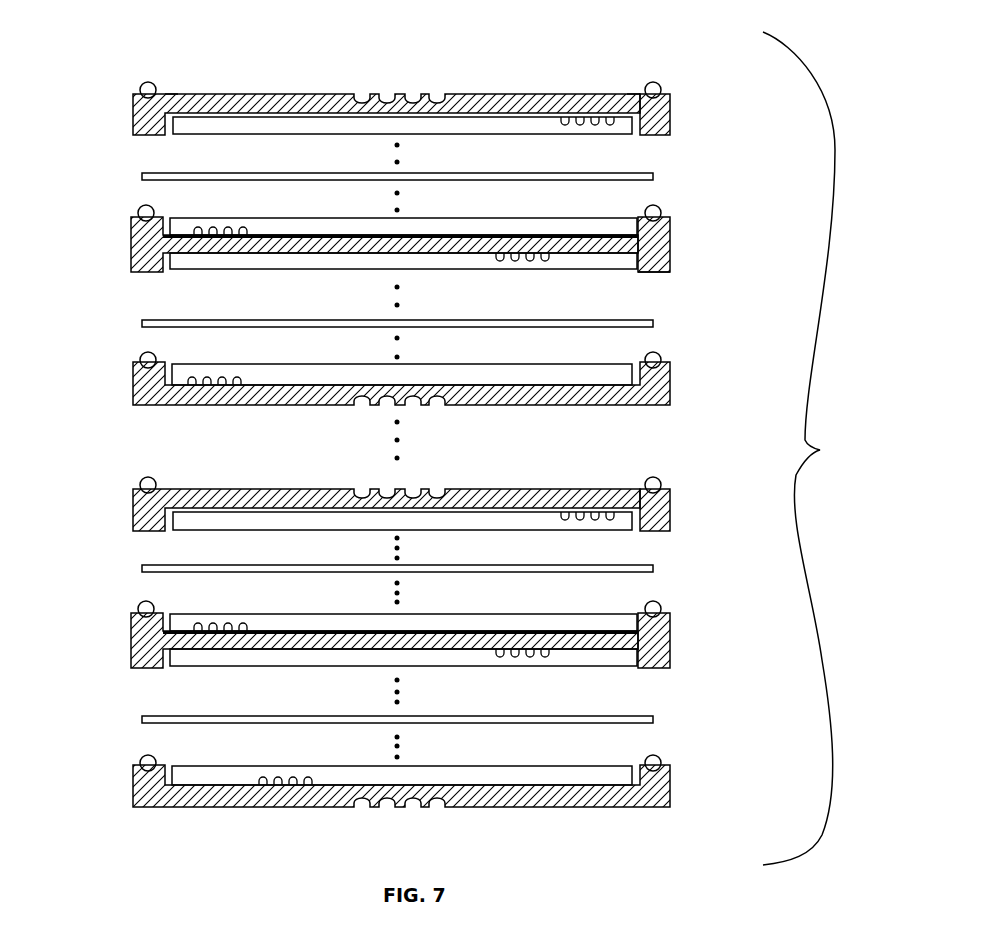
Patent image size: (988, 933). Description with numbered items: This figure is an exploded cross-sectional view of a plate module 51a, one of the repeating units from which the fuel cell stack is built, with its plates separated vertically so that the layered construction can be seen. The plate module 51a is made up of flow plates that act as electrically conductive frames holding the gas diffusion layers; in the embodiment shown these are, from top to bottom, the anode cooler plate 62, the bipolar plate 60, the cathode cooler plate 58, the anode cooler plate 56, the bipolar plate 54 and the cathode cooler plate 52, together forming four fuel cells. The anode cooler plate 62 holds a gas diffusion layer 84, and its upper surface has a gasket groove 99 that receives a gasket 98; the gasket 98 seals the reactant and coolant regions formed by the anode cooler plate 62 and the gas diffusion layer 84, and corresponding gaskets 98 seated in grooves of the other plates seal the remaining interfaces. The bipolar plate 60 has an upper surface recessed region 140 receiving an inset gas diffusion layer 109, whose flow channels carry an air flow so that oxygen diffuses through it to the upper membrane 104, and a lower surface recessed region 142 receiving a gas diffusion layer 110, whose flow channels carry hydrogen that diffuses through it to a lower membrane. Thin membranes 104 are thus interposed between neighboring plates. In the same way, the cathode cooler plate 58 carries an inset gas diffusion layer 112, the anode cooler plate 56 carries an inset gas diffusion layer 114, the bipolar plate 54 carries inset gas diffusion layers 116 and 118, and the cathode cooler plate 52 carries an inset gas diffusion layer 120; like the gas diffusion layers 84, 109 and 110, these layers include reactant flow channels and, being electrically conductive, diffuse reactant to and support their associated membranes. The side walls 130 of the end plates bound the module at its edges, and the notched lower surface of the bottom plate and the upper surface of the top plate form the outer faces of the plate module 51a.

The plate module 51a is at (820, 450).
The cathode cooler plate 52 is at (133, 790).
The bipolar plate 54 is at (131, 640).
The anode cooler plate 56 is at (133, 512).
The cathode cooler plate 58 is at (133, 387).
The bipolar plate 60 is at (130, 242).
The anode cooler plate 62 is at (133, 117).
The gas diffusion layer 84 is at (298, 136).
The gasket 98 is at (145, 84).
The gasket groove 99 is at (158, 90).
The upper membrane 104 is at (142, 173).
The gas diffusion layer 109 is at (447, 224).
The gas diffusion layer 110 is at (235, 268).
The gas diffusion layer 112 is at (202, 367).
The gas diffusion layer 114 is at (230, 531).
The gas diffusion layer 116 is at (230, 615).
The gas diffusion layer 118 is at (230, 667).
The gas diffusion layer 120 is at (242, 777).
The side wall 130 is at (670, 112).
The upper surface recessed region 140 is at (640, 218).
The lower surface recessed region 142 is at (647, 270).